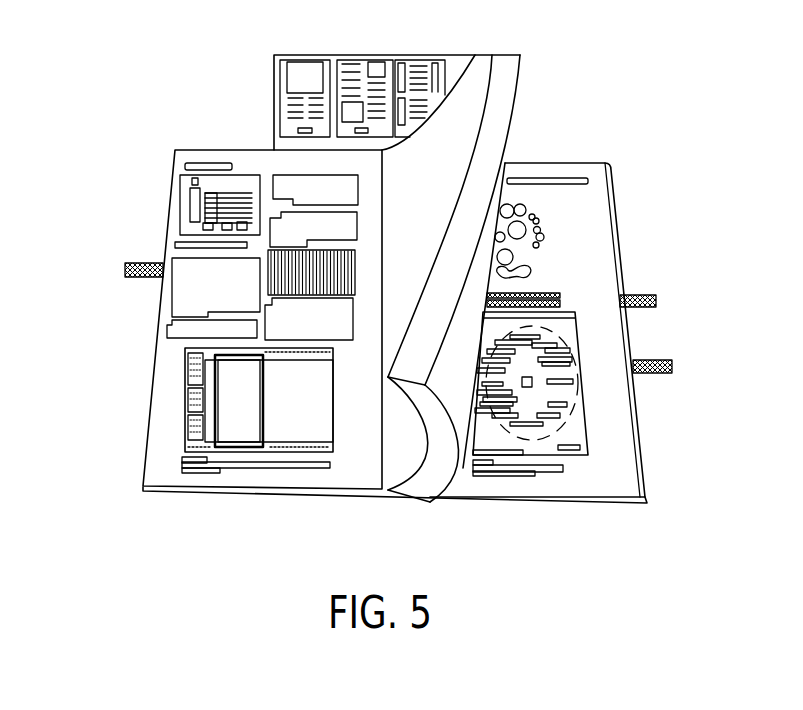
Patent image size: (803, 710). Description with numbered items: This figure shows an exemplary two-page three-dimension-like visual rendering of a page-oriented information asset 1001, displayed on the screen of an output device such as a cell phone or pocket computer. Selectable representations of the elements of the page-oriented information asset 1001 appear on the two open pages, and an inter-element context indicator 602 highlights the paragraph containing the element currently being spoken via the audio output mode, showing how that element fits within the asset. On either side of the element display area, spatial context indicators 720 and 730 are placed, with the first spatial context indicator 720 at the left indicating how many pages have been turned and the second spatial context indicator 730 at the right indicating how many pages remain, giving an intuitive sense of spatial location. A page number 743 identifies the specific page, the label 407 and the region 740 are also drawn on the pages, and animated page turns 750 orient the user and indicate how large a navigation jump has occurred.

The animated page turns 750 is at (503, 70).
The page-oriented information asset 1001 is at (590, 241).
The inter-element context indicator 602 is at (268, 265).
The first spatial context indicator 720 is at (143, 488).
The left page 740 is at (262, 488).
The second spatial context indicator 730 is at (645, 482).
The page number 743 is at (539, 519).
The page number 407 is at (527, 487).